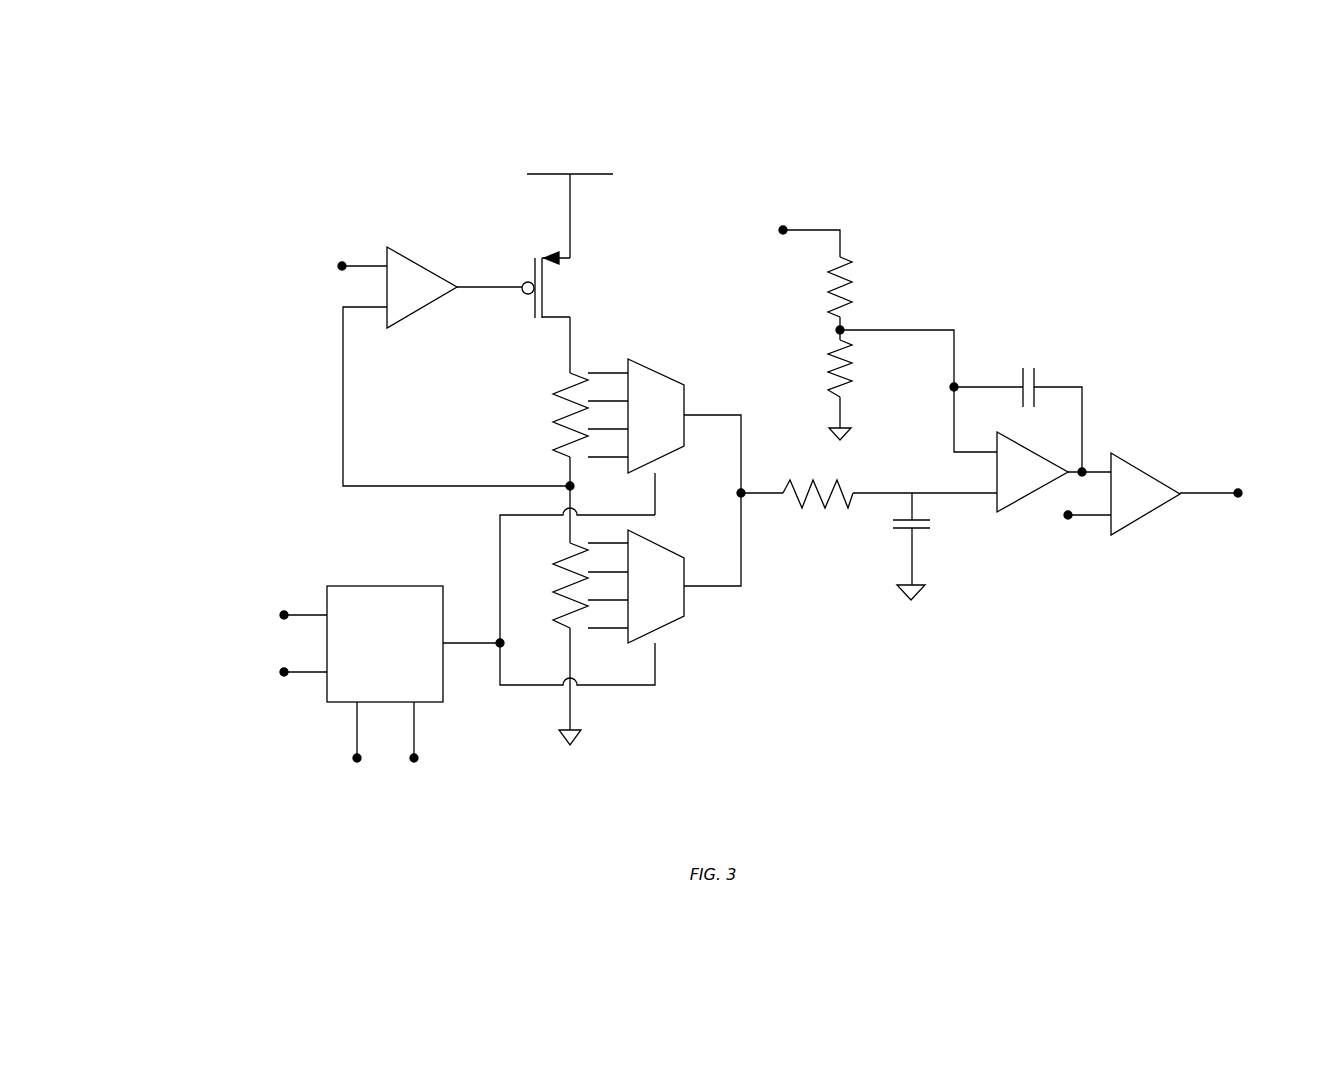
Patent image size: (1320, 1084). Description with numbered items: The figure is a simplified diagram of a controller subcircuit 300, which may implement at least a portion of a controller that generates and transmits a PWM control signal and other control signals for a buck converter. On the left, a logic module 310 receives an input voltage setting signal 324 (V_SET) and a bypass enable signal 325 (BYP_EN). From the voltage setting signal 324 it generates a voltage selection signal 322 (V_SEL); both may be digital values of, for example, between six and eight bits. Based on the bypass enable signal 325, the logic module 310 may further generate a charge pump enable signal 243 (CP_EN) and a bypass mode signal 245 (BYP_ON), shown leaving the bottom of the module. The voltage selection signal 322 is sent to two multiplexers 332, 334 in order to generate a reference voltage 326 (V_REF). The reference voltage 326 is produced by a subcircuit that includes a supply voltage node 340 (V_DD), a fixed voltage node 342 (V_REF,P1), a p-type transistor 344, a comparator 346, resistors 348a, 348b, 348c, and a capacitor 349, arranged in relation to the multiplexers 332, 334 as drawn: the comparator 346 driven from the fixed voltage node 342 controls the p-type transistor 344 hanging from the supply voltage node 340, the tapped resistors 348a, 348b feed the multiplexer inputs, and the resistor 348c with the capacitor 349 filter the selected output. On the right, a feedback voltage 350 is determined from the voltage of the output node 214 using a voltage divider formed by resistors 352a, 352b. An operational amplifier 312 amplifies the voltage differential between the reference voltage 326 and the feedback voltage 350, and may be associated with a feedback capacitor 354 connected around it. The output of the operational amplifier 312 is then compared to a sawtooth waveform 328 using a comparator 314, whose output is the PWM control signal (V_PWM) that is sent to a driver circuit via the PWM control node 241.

The controller subcircuit 300 is at (348, 122).
The supply voltage node 340 is at (571, 150).
The fixed voltage node 342 is at (285, 250).
The p-type transistor 344 is at (570, 288).
The comparator 346 is at (456, 366).
The resistor 348a is at (542, 416).
The resistor 348b is at (548, 575).
The resistor 348c is at (812, 512).
The capacitor 349 is at (897, 535).
The multiplexer 332 is at (684, 472).
The multiplexer 334 is at (656, 586).
The reference voltage 326 is at (727, 493).
The voltage selection signal 322 is at (472, 533).
The input voltage setting signal 324 is at (243, 597).
The bypass enable signal 325 is at (243, 655).
The logic module 310 is at (413, 644).
The charge pump enable signal 243 is at (357, 800).
The bypass mode signal 245 is at (414, 800).
The output node 214 is at (783, 213).
The resistor 352a is at (863, 280).
The resistor 352b is at (858, 380).
The feedback voltage 350 is at (968, 337).
The feedback capacitor 354 is at (1053, 363).
The operational amplifier 312 is at (1054, 472).
The comparator 314 is at (1145, 494).
The sawtooth waveform 328 is at (1068, 550).
The PWM control node 241 is at (1226, 455).